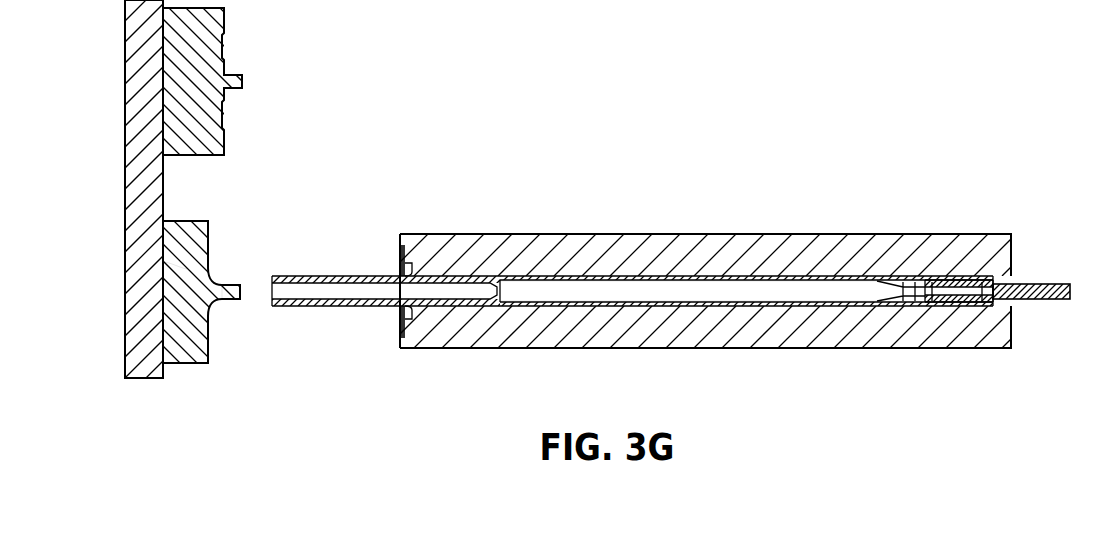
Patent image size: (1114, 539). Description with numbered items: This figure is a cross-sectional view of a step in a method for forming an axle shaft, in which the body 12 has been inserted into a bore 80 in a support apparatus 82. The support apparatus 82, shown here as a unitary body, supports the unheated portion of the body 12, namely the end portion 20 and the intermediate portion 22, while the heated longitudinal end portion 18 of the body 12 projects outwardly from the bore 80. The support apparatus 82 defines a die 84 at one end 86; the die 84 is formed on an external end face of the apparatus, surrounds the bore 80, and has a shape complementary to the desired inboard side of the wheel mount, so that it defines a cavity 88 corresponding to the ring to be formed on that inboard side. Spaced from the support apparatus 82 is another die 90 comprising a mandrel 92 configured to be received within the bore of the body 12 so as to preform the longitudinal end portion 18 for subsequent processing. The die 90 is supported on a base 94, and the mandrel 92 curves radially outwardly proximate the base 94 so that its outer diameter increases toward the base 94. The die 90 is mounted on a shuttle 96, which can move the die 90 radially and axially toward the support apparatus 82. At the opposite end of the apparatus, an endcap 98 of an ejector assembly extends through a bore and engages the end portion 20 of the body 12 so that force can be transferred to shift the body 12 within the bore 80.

The shuttle 96 is at (140, 93).
The die 90 is at (208, 239).
The base 94 is at (187, 269).
The mandrel 92 is at (223, 291).
The longitudinal end portion 18 is at (348, 276).
The body 12 is at (630, 292).
The intermediate portion 22 is at (600, 297).
The support apparatus 82 is at (790, 256).
The bore 80 is at (800, 306).
The die 84 is at (400, 349).
The cavity 88 is at (399, 318).
The end 86 is at (431, 234).
The end portion 20 is at (953, 293).
The endcap 98 is at (1040, 286).